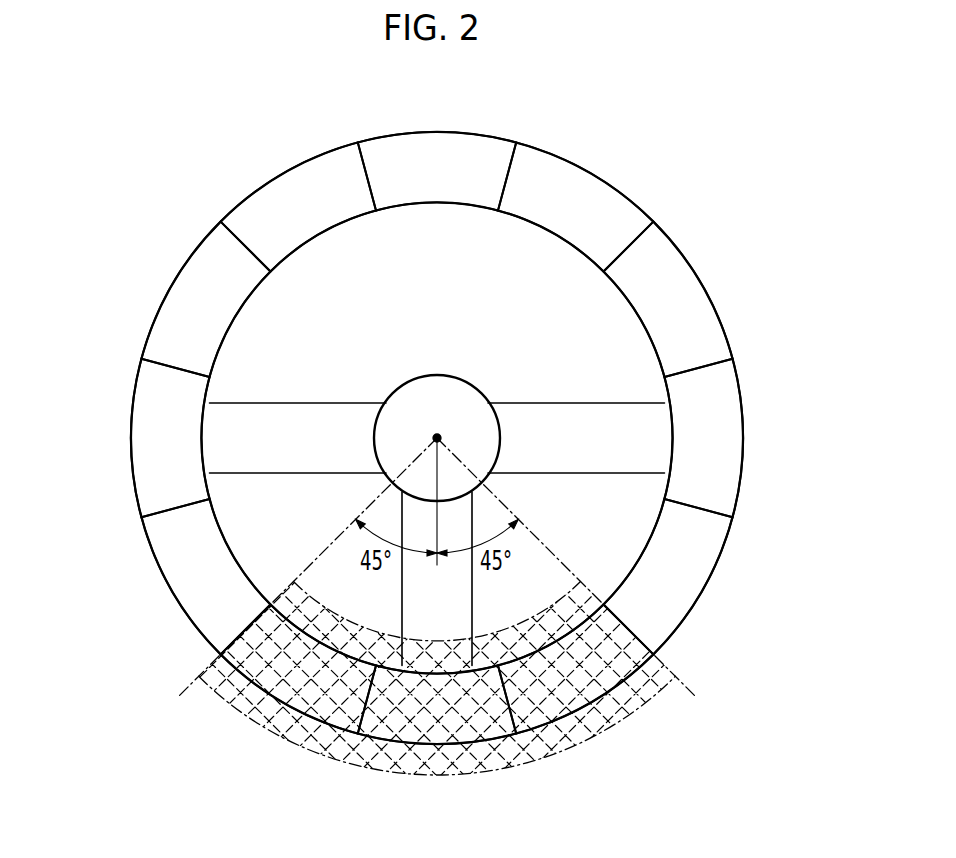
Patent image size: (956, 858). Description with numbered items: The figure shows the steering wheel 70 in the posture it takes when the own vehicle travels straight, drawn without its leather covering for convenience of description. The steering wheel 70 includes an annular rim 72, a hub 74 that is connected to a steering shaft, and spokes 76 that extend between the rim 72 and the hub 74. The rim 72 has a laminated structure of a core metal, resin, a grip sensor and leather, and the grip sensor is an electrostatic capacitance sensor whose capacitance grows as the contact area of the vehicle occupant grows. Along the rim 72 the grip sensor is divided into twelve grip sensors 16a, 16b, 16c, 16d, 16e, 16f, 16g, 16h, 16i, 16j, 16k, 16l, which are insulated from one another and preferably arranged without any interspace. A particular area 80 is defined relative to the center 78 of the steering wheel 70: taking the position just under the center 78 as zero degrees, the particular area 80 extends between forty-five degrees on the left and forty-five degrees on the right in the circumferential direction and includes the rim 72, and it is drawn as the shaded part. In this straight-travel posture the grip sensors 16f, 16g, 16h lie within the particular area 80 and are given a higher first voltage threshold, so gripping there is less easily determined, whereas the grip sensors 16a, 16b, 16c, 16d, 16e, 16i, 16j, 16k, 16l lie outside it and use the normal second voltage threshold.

The steering wheel 70 is at (212, 86).
The rim 72 is at (318, 237).
The hub 74 is at (447, 373).
The spokes 76 is at (540, 402).
The center 78 is at (436, 434).
The particular area 80 is at (327, 733).
The grip sensor 16a is at (420, 153).
The grip sensor 16b is at (563, 185).
The grip sensor 16c is at (673, 282).
The grip sensor 16d is at (717, 450).
The grip sensor 16e is at (685, 592).
The grip sensor 16f is at (567, 702).
The grip sensor 16g is at (431, 735).
The grip sensor 16h is at (295, 697).
The grip sensor 16i is at (197, 593).
The grip sensor 16j is at (152, 445).
The grip sensor 16k is at (183, 310).
The grip sensor 16l is at (280, 200).